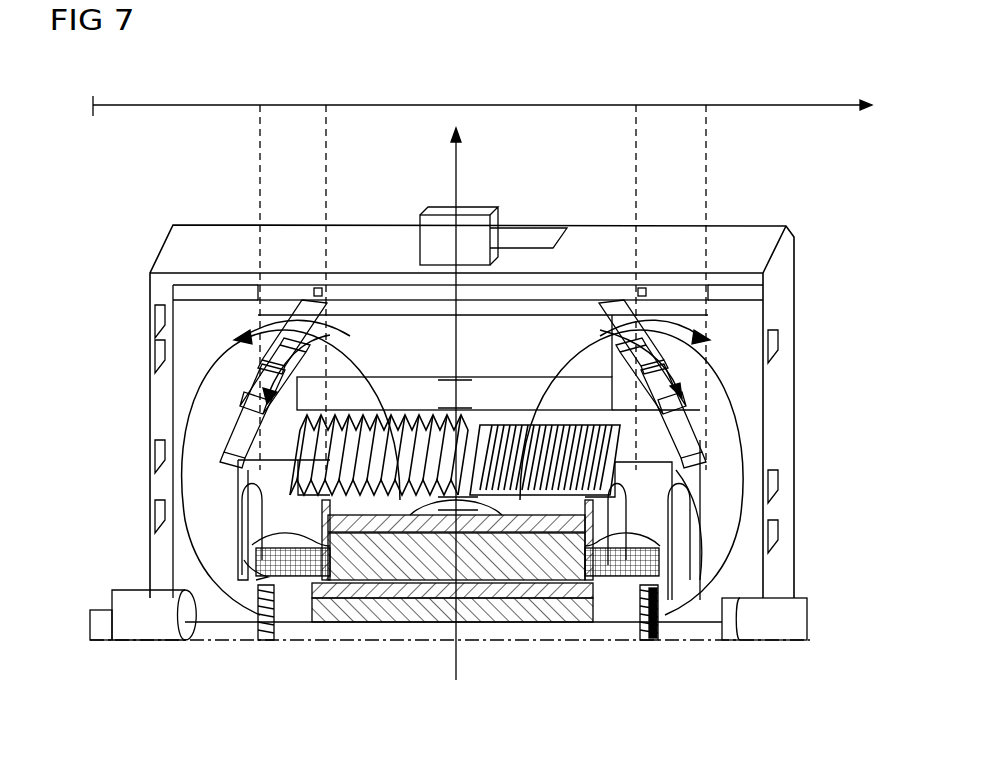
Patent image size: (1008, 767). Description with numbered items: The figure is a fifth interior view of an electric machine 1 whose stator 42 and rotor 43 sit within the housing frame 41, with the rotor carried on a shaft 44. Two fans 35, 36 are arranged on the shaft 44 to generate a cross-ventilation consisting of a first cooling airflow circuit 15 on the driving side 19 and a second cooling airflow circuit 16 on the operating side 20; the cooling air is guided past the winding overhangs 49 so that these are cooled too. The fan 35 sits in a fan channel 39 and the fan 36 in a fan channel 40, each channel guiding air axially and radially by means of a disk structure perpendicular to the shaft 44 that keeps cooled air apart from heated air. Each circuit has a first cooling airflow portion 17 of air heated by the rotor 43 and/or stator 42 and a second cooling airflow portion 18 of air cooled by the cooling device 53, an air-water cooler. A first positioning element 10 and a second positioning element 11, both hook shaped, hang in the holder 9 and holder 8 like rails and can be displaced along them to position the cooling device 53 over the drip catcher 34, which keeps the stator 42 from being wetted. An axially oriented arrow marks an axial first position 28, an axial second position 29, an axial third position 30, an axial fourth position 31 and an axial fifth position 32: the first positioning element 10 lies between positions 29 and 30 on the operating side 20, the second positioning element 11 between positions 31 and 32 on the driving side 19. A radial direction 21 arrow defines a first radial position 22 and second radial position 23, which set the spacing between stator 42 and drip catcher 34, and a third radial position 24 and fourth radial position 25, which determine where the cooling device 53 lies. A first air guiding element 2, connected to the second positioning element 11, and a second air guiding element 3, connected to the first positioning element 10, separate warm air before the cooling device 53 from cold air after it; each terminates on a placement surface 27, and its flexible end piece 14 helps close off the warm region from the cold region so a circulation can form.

The electric machine 1 is at (866, 276).
The first air guiding element 2 is at (672, 448).
The second air guiding element 3 is at (262, 432).
The third holder 8 is at (282, 345).
The fourth holder 9 is at (355, 300).
The first positioning element 10 is at (320, 290).
The second positioning element 11 is at (640, 295).
The flexible end piece 14 is at (690, 468).
The first cooling airflow circuit 15 is at (740, 391).
The second cooling airflow circuit 16 is at (240, 388).
The first cooling airflow portion 17 is at (385, 500).
The second cooling airflow portion 18 is at (272, 292).
The driving side 19 is at (832, 580).
The operating side 20 is at (92, 578).
The radial direction 21 is at (458, 160).
The first radial position 22 is at (470, 500).
The second radial position 23 is at (430, 482).
The third radial position 24 is at (462, 408).
The fourth radial position 25 is at (445, 378).
The placement surface 27 is at (256, 460).
The axial first position 28 is at (95, 106).
The axial second position 29 is at (262, 106).
The axial third position 30 is at (328, 106).
The axial fourth position 31 is at (638, 106).
The axial fifth position 32 is at (708, 106).
The drip catcher 34 is at (530, 405).
The fan 35 is at (648, 640).
The fan 36 is at (265, 640).
The fan channel 39 is at (690, 560).
The fan channel 40 is at (245, 522).
The housing frame 41 is at (150, 302).
The stator 42 is at (375, 540).
The rotor 43 is at (565, 530).
The shaft 44 is at (310, 630).
The winding overhangs 49 is at (600, 520).
The cooling device 53 is at (383, 355).